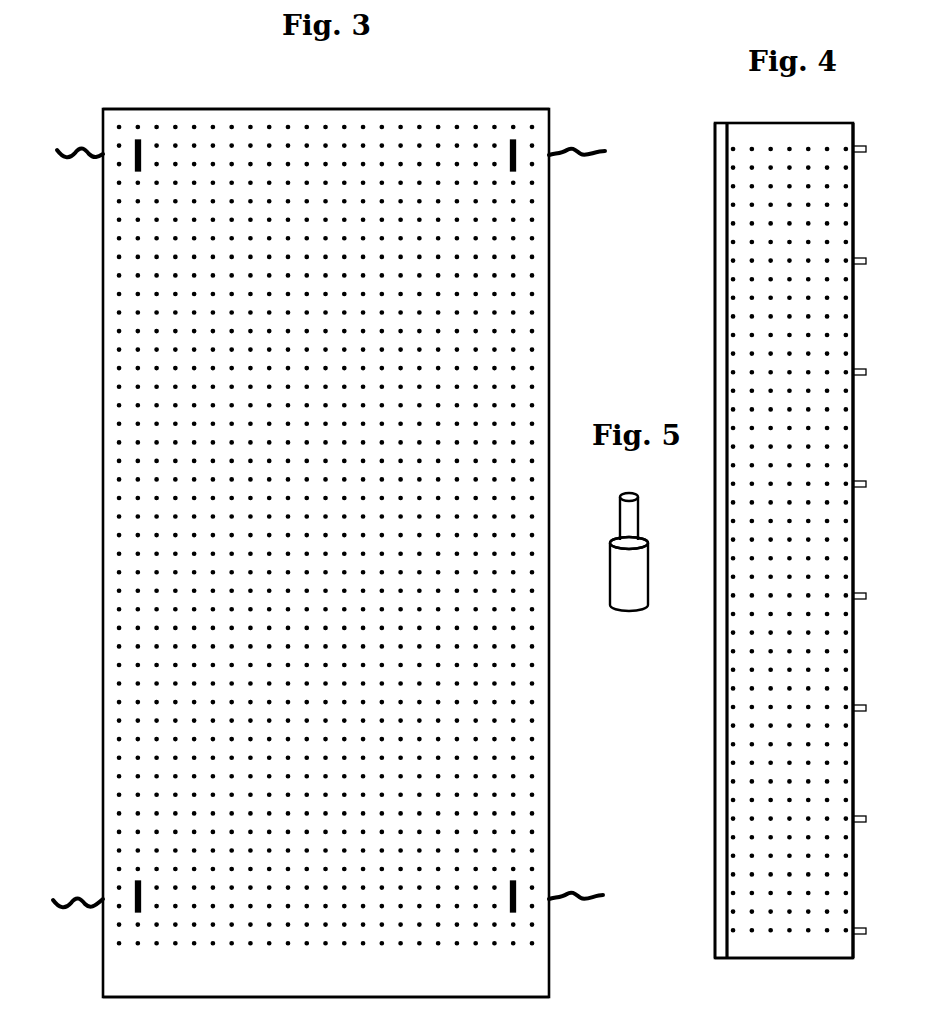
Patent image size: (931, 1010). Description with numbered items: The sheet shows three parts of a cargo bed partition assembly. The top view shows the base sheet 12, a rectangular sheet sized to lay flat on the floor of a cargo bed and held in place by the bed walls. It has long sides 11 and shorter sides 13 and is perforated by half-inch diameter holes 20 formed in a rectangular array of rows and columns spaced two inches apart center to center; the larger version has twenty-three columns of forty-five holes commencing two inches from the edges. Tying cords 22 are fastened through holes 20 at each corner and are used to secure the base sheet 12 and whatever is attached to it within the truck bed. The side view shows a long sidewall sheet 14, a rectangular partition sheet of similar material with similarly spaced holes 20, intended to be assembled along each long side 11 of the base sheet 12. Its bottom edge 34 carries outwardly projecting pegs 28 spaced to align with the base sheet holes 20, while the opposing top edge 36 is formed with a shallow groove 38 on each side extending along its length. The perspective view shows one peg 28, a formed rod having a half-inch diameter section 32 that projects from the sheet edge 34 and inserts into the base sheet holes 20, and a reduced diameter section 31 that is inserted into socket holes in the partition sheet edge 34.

In FIG. 3, the long sides 11 is at (103, 357).
In FIG. 3, the base sheet 12 is at (150, 973).
In FIG. 3, the shorter sides 13 is at (151, 109).
In FIG. 4, the sidewall sheet 14 is at (824, 950).
In FIG. 3, the holes 20 is at (119, 257).
In FIG. 4, the holes 20 is at (752, 206).
In FIG. 3, the tying cords 22 is at (63, 896).
In FIG. 4, the pegs 28 is at (862, 936).
In FIG. 5, the pegs 28 is at (634, 572).
In FIG. 5, the reduced diameter section 31 is at (632, 513).
In FIG. 5, the half inch diameter section 32 is at (612, 540).
In FIG. 4, the bottom edge 34 is at (854, 320).
In FIG. 4, the top edge 36 is at (715, 872).
In FIG. 4, the groove 38 is at (727, 958).